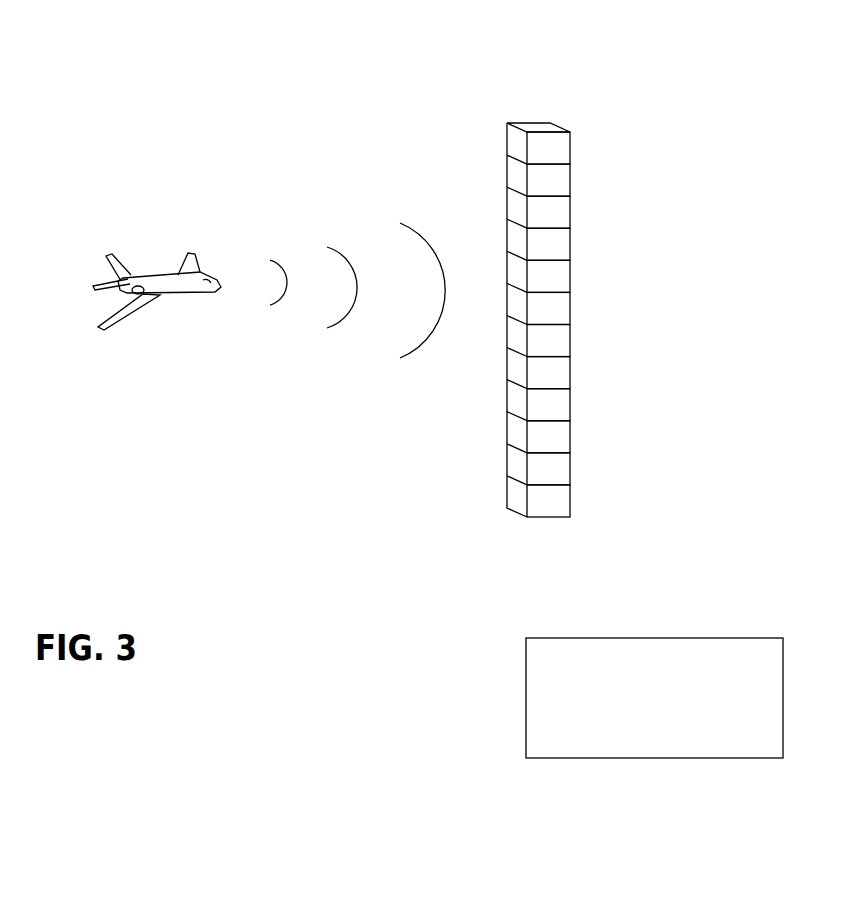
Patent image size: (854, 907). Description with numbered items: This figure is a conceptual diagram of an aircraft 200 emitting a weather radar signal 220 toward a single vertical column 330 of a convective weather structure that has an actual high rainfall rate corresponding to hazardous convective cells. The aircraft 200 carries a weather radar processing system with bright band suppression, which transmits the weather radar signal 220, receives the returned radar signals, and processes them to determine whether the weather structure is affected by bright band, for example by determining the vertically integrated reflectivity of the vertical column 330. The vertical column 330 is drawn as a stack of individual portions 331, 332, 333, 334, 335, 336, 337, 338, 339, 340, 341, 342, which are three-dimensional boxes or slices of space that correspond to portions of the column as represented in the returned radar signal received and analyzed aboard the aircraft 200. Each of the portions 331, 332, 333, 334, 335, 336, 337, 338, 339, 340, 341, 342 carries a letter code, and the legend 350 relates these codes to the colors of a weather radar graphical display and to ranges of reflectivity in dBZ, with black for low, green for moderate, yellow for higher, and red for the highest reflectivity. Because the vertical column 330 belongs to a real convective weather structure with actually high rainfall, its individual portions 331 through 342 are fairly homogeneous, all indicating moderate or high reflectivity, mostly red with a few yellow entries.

The aircraft 200 is at (175, 342).
The weather radar signal 220 is at (313, 195).
The vertical column 330 is at (517, 280).
The individual portion 331 is at (571, 148).
The individual portion 332 is at (571, 180).
The individual portion 333 is at (571, 212).
The individual portion 334 is at (571, 244).
The individual portion 335 is at (571, 276).
The individual portion 336 is at (571, 308).
The individual portion 337 is at (571, 340).
The individual portion 338 is at (571, 373).
The individual portion 339 is at (571, 405).
The individual portion 340 is at (571, 437).
The individual portion 341 is at (571, 469).
The individual portion 342 is at (571, 501).
The legend 350 is at (507, 687).